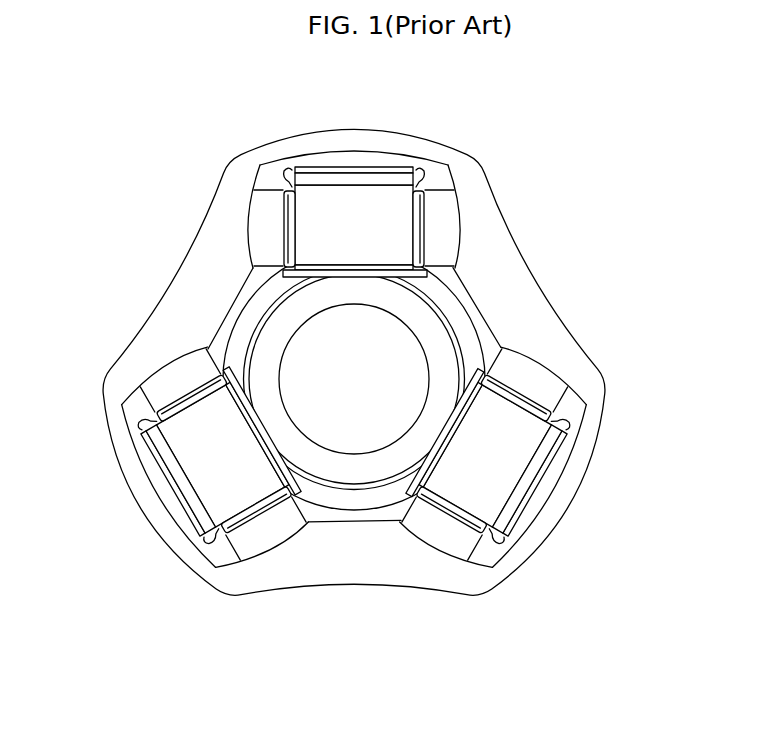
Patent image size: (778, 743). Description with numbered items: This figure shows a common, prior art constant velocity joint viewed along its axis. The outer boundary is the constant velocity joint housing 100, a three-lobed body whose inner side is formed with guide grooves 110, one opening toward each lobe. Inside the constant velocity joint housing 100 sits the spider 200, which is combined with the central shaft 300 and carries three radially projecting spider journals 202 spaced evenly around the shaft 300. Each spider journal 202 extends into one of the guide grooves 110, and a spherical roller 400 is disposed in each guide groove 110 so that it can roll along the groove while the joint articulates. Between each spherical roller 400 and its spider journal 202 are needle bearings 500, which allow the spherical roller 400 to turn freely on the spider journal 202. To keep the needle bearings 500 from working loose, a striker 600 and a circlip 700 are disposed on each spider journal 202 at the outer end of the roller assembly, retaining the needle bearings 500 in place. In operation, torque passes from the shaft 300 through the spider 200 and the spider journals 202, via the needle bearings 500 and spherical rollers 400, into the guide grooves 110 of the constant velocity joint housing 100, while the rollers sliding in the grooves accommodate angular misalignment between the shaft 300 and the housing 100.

The constant velocity joint housing 100 is at (541, 293).
The guide grooves 110 is at (471, 227).
The spider 200 is at (359, 522).
The spider journal 202 is at (525, 455).
The shaft 300 is at (343, 440).
The spherical rollers 400 is at (263, 223).
The needle bearings 500 is at (283, 181).
The striker 600 is at (435, 172).
The circlip 700 is at (408, 165).